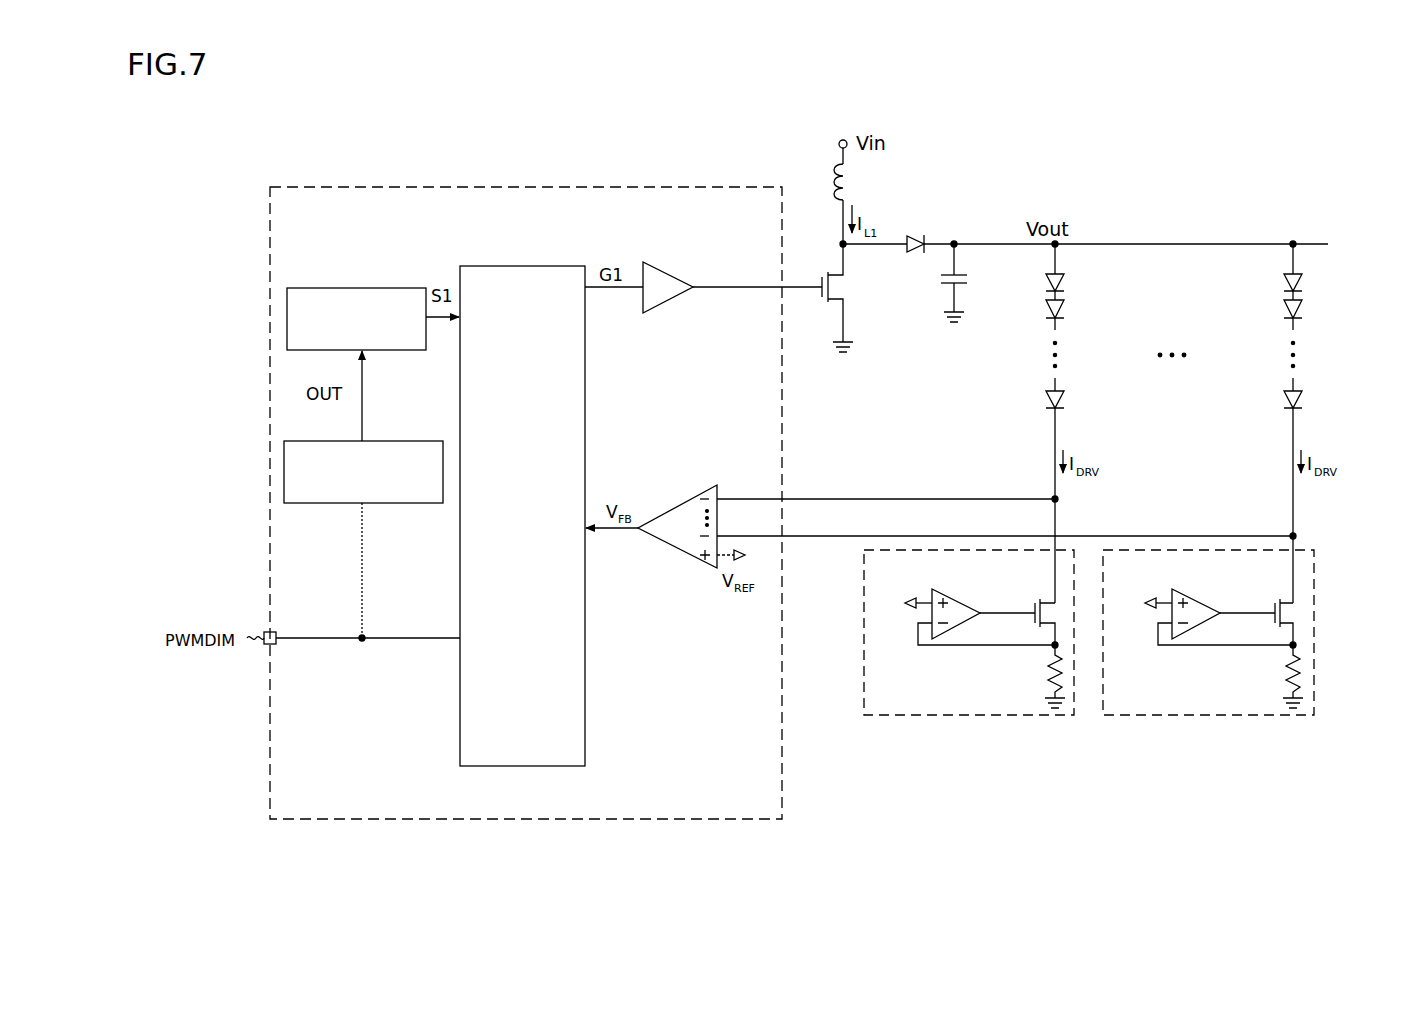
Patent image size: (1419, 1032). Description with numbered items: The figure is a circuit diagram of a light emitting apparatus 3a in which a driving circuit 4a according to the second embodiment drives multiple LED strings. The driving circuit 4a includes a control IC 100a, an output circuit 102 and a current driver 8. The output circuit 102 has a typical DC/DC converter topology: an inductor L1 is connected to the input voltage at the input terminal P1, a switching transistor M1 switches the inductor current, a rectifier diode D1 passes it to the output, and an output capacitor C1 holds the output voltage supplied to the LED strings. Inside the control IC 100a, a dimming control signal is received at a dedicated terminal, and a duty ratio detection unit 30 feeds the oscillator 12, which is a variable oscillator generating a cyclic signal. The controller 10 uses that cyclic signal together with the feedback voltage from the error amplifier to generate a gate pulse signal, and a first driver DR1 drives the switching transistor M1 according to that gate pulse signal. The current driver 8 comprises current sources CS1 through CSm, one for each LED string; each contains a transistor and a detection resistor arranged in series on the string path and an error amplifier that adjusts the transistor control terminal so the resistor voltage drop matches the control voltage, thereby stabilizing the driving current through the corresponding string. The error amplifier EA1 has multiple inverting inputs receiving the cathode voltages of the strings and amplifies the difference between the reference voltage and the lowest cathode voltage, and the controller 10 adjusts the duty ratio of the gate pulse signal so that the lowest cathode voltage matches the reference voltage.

The control IC 100a is at (782, 801).
The oscillator 12 is at (408, 350).
The duty ratio detection unit 30 is at (408, 503).
The controller 10 is at (522, 766).
The first driver DR1 is at (676, 261).
The switching transistor M1 is at (848, 288).
The input terminal P1 is at (835, 144).
The inductor L1 is at (852, 177).
The rectifier diode D1 is at (920, 236).
The output capacitor C1 is at (972, 282).
The light emitting apparatus 3a is at (1203, 189).
The output circuit 102 is at (1013, 433).
The error amplifier EA1 is at (668, 545).
The current source CS1 is at (938, 632).
The current source CSm is at (1240, 632).
The current driver 8 is at (1327, 744).
The driving circuit 4a is at (1372, 835).